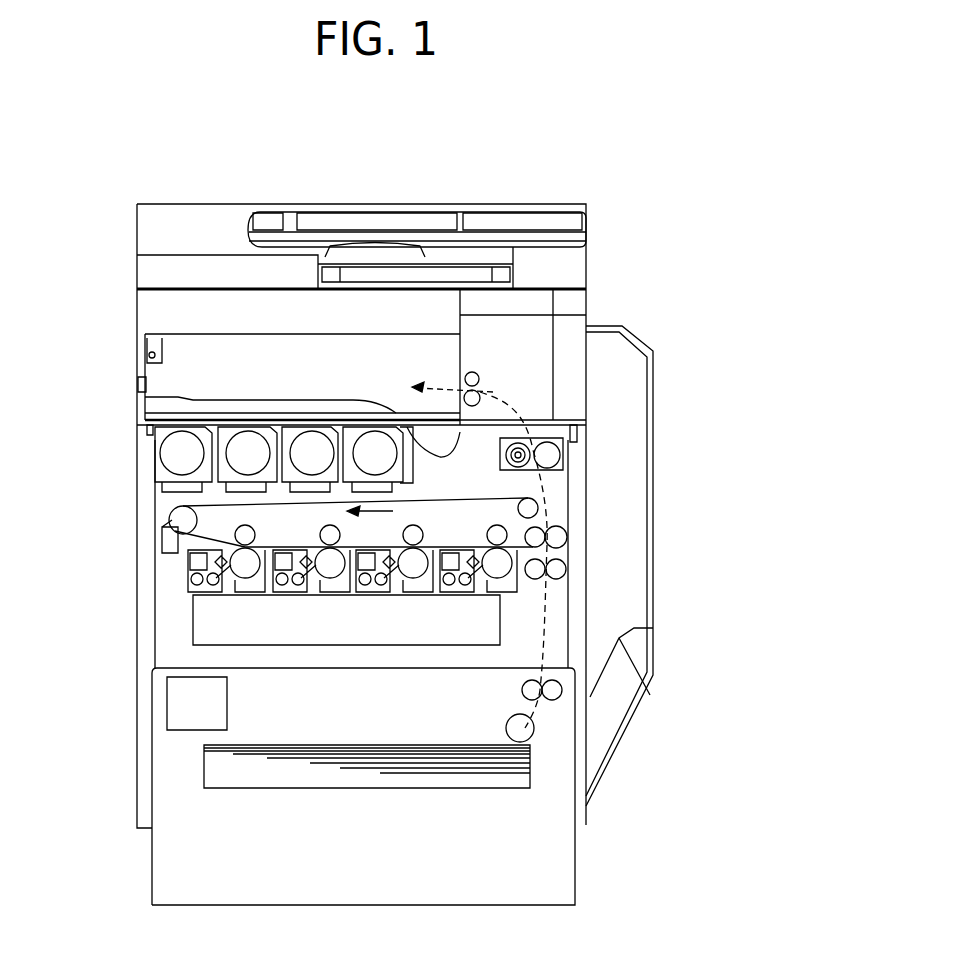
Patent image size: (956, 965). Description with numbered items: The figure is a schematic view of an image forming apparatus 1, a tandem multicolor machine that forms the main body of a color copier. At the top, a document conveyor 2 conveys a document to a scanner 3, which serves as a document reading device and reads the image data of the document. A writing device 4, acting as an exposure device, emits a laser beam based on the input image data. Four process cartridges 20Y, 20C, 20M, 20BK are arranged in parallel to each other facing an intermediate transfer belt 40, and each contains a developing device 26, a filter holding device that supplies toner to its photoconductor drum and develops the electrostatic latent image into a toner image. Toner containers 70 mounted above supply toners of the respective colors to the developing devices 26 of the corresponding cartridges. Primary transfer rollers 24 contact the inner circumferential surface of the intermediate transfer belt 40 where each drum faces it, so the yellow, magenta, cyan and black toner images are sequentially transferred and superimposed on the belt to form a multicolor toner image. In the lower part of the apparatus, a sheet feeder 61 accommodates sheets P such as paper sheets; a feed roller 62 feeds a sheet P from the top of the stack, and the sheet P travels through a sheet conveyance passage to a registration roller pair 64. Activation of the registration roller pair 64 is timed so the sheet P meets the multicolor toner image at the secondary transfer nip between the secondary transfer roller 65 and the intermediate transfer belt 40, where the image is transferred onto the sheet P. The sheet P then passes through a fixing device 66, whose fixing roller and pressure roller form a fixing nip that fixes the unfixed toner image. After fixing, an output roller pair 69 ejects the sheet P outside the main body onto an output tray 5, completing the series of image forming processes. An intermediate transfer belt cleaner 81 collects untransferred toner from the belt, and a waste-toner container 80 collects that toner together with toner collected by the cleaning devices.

The image forming apparatus 1 is at (463, 170).
The document conveyor 2 is at (137, 237).
The scanner 3 is at (137, 306).
The output tray 5 is at (270, 400).
The output roller pair 69 is at (475, 372).
The toner containers 70 is at (157, 458).
The intermediate transfer belt 40 is at (462, 500).
The intermediate transfer belt cleaner 81 is at (163, 537).
The primary transfer rollers 24 is at (488, 530).
The developing device 26 is at (190, 581).
The process cartridge 20Y is at (250, 583).
The process cartridge 20C is at (335, 583).
The process cartridge 20M is at (418, 583).
The process cartridge 20BK is at (502, 583).
The writing device 4 is at (193, 618).
The fixing device 66 is at (563, 459).
The secondary transfer roller 65 is at (563, 533).
The registration roller pair 64 is at (563, 566).
The waste-toner container 80 is at (178, 703).
The feed roller 62 is at (531, 731).
The sheet feeder 61 is at (247, 788).
The sheet P is at (420, 763).